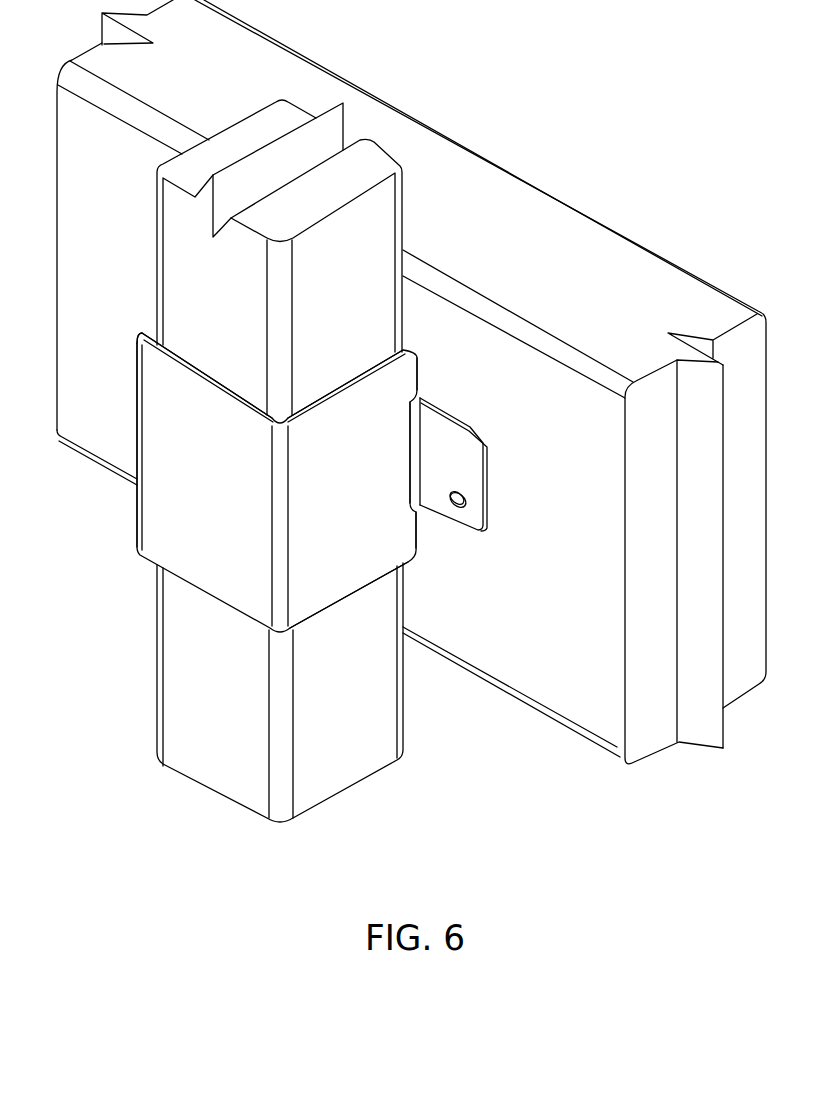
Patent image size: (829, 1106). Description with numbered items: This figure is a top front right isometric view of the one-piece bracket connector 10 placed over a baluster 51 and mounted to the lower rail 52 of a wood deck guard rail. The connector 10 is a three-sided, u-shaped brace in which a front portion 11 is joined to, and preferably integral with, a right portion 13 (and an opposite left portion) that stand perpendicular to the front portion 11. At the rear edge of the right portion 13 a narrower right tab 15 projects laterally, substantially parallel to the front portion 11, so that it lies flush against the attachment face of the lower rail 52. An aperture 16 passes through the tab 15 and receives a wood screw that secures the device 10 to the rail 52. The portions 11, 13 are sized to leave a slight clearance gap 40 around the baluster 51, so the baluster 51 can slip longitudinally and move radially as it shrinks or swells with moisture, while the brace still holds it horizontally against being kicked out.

The bracket connector 10 is at (193, 495).
The front portion 11 is at (150, 490).
The right portion 13 is at (368, 568).
The right tab 15 is at (488, 478).
The aperture 16 is at (470, 518).
The clearance gap 40 is at (146, 322).
The baluster 51 is at (360, 762).
The lower rail 52 is at (613, 253).